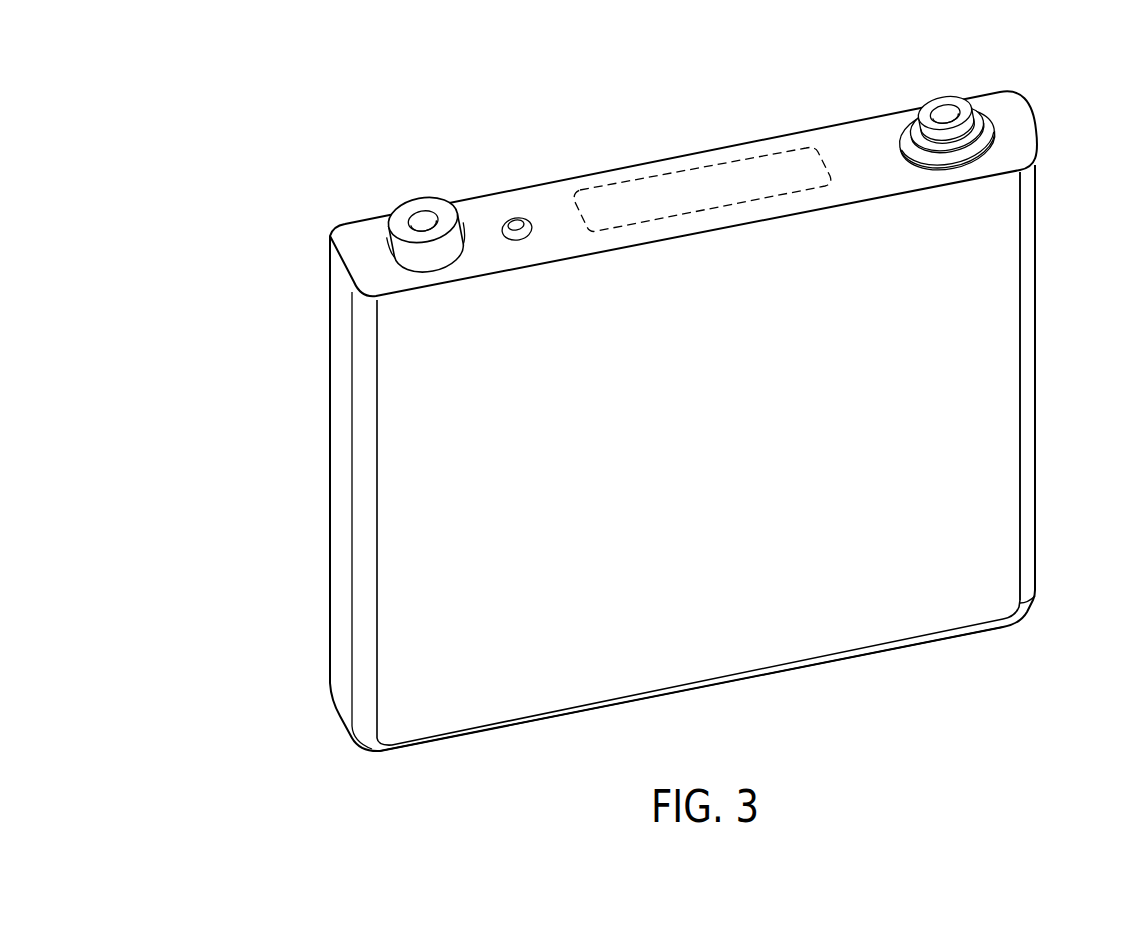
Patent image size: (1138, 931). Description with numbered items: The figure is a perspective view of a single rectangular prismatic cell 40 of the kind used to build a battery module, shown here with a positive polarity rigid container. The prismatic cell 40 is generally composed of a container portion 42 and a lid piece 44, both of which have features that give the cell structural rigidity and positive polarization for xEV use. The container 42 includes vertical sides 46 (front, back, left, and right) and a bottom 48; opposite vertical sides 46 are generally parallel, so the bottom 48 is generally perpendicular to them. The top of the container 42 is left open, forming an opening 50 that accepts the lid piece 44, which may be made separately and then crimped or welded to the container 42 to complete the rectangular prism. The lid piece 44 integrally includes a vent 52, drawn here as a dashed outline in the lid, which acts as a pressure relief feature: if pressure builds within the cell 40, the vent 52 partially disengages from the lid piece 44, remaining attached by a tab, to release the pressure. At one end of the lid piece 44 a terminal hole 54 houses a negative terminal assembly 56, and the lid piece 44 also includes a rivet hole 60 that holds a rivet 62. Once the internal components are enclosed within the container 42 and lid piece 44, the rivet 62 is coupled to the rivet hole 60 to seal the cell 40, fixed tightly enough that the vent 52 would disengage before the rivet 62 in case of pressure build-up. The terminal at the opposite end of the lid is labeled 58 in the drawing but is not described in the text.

The prismatic cell 40 is at (669, 433).
The container portion 42 is at (669, 434).
The lid piece 44 is at (848, 138).
The vertical sides 46 is at (412, 425).
The bottom 48 is at (530, 722).
The opening 50 is at (987, 178).
The vent 52 is at (693, 172).
The terminal hole 54 is at (993, 157).
The negative terminal assembly 56 is at (955, 93).
The negative terminal 58 is at (425, 203).
The rivet hole 60 is at (527, 223).
The rivet 62 is at (512, 218).